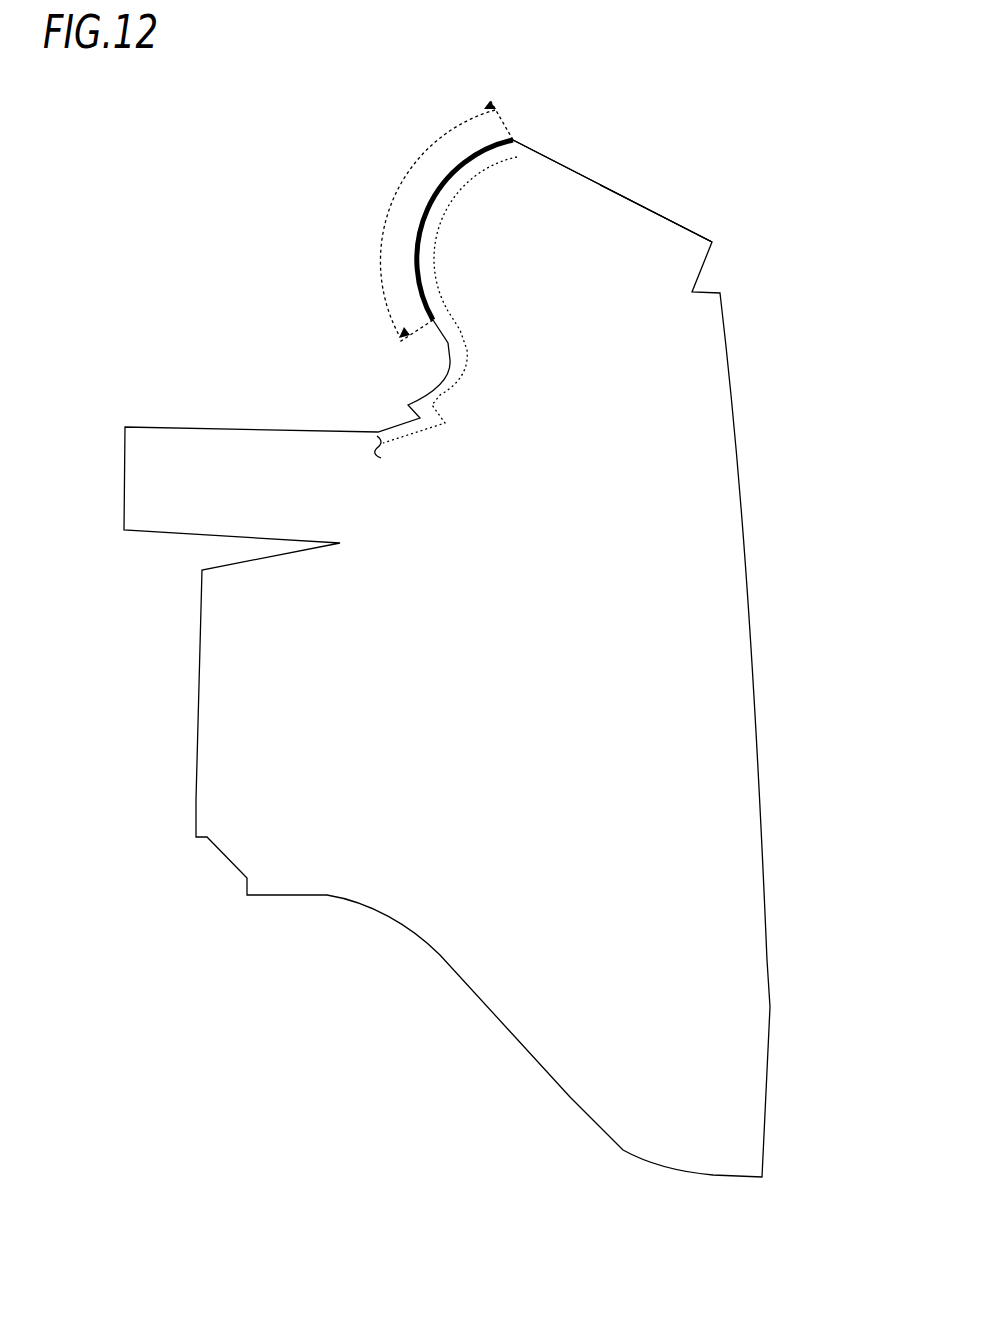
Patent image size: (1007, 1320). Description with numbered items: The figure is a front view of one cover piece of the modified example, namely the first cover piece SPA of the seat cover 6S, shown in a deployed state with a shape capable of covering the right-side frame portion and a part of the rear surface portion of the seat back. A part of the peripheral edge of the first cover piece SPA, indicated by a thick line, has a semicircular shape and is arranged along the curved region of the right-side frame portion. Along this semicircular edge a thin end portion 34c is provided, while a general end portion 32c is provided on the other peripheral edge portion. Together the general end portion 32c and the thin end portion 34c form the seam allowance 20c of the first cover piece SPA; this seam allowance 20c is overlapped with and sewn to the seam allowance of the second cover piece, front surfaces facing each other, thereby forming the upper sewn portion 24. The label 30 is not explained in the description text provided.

The seat pad 30 is at (564, 270).
The seam allowance 20c is at (491, 169).
The upper sewn portion 24 is at (490, 274).
The thin end portion 34c is at (436, 221).
The general end portion 32c is at (400, 337).
The first cover piece SPA is at (648, 207).
The seat cover 6S is at (671, 183).